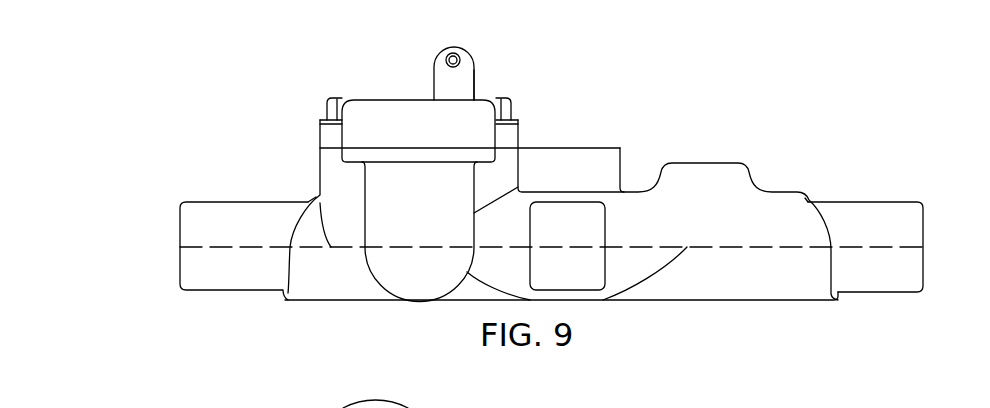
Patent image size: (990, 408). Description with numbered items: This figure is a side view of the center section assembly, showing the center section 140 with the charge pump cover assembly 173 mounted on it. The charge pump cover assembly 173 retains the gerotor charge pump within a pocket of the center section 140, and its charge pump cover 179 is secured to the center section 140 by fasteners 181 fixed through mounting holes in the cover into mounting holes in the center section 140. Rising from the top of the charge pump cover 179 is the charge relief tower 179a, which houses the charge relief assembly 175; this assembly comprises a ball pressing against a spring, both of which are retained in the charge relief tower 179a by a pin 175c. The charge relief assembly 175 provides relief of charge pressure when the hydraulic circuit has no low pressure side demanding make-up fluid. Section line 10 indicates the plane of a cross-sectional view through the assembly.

The section line 10- 10 is at (180, 247).
The center section 140 is at (437, 213).
The charge pump cover assembly 173 is at (714, 102).
The charge relief assembly 175 is at (414, 61).
The pin 175c is at (460, 58).
The charge pump cover 179 is at (437, 135).
The charge relief tower 179a is at (474, 87).
The fasteners 181 is at (327, 110).